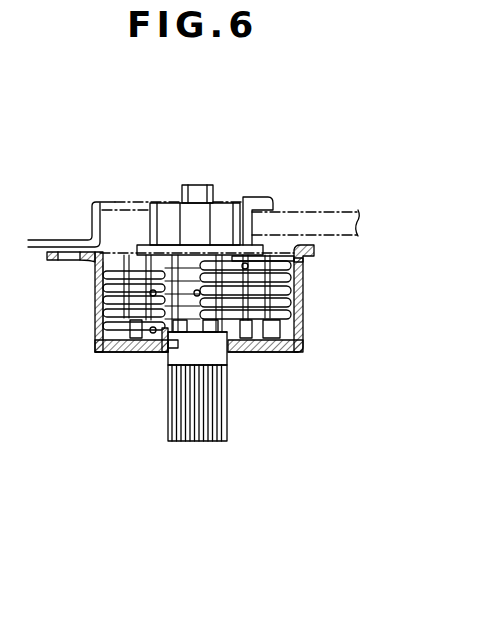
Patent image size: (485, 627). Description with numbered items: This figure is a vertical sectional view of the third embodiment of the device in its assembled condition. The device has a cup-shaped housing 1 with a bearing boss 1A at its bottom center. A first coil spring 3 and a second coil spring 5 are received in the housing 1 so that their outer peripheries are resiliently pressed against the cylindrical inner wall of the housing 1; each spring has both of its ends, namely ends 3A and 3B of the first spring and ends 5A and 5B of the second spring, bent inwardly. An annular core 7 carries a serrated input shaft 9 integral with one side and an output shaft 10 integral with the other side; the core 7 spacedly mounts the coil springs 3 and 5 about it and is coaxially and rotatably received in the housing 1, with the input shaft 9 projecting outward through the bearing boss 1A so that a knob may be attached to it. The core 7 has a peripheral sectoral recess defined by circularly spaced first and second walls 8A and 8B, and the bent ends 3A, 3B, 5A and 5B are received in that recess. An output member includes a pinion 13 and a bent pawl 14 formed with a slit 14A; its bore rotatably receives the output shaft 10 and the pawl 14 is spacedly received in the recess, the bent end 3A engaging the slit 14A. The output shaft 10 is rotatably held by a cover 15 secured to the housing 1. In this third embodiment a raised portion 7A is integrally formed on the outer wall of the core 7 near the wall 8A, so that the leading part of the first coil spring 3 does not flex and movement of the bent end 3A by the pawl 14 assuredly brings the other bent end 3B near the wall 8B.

The housing 1 is at (302, 317).
The bearing boss 1A is at (167, 360).
The first coil spring 3 is at (263, 260).
The bent end of first spring 3A is at (163, 350).
The bent end of first spring 3B is at (150, 352).
The second coil spring 5 is at (100, 343).
The bent end of second spring 5A is at (248, 268).
The bent end of second spring 5B is at (157, 295).
The annular core 7 is at (135, 260).
The raised portion 7A is at (283, 346).
The first wall 8A is at (253, 197).
The second wall 8B is at (110, 200).
The serrated input shaft 9 is at (200, 443).
The output shaft 10 is at (199, 188).
The pinion 13 is at (223, 213).
The bent pawl 14 is at (180, 235).
The slit 14A is at (200, 336).
The cover 15 is at (138, 195).